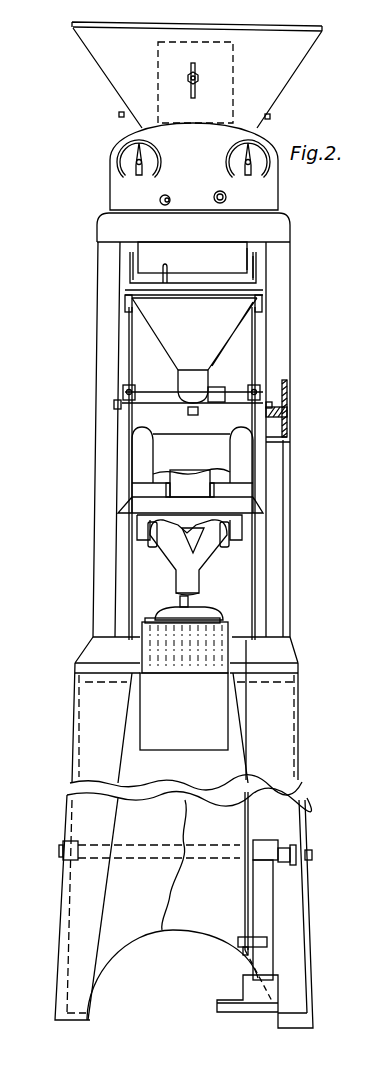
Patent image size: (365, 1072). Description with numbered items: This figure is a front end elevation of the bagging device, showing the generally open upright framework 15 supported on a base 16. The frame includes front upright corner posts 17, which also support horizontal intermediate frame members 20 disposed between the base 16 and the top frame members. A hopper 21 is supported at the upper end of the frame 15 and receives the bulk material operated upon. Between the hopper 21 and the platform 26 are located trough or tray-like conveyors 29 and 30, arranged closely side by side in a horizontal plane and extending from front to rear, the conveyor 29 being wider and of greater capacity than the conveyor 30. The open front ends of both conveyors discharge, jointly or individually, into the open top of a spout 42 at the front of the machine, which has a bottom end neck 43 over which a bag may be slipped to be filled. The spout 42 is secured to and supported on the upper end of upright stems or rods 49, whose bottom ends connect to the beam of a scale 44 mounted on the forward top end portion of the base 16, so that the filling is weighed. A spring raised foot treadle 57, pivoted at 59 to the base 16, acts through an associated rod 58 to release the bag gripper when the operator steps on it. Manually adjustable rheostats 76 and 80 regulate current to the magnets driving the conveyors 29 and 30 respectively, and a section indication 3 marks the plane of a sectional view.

The hopper 21 is at (285, 71).
The rheostat 80 is at (149, 179).
The rheostat 76 is at (262, 178).
The section line 3 is at (208, 197).
The conveyor 30 is at (128, 266).
The conveyor 29 is at (258, 271).
The spout 42 is at (228, 318).
The neck 43 is at (188, 378).
The framework 15 is at (288, 440).
The stems or rods 49 is at (128, 441).
The scale 44 is at (238, 486).
The intermediate frame members 20 is at (354, 484).
The front upright corner posts 17 is at (97, 563).
The platform 26 is at (354, 719).
The pivot 59 is at (232, 848).
The rod 58 is at (245, 902).
The foot treadle 57 is at (268, 958).
The base 16 is at (310, 900).